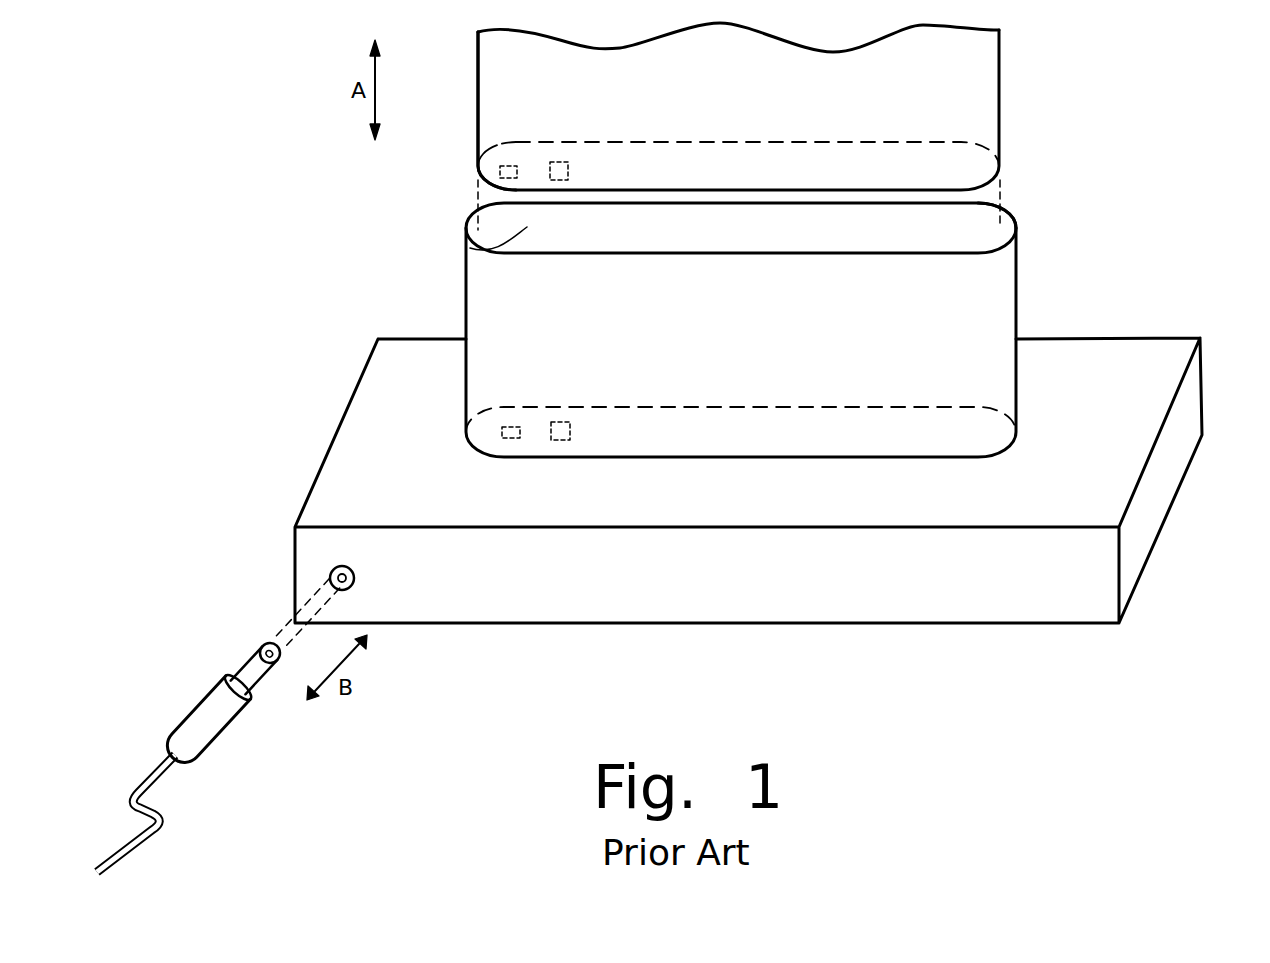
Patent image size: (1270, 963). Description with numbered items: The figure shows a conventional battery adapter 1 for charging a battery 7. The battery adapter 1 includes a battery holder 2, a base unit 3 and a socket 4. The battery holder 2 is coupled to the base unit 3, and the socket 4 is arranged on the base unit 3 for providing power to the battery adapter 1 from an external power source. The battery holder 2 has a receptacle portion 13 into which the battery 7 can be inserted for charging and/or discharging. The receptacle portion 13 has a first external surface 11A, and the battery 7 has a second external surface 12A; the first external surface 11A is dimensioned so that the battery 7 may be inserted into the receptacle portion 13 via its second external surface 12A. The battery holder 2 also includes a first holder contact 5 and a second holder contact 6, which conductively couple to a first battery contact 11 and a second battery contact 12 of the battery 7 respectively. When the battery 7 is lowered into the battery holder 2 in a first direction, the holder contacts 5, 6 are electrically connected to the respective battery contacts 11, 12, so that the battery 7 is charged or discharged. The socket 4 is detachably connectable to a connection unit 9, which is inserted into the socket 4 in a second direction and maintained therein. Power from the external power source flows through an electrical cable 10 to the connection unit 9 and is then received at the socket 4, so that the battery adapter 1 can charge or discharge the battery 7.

The battery adapter 1 is at (268, 463).
The battery holder 2 is at (1017, 278).
The base unit 3 is at (1167, 522).
The socket 4 is at (333, 570).
The first holder contact 5 is at (507, 440).
The second holder contact 6 is at (556, 441).
The battery 7 is at (1000, 95).
The connection unit 9 is at (222, 737).
The electrical cable 10 is at (147, 783).
The first battery contact 11 is at (511, 165).
The second battery contact 12 is at (561, 162).
The first external surface 11A is at (1017, 213).
The second external surface 12A is at (477, 172).
The receptacle portion 13 is at (470, 248).